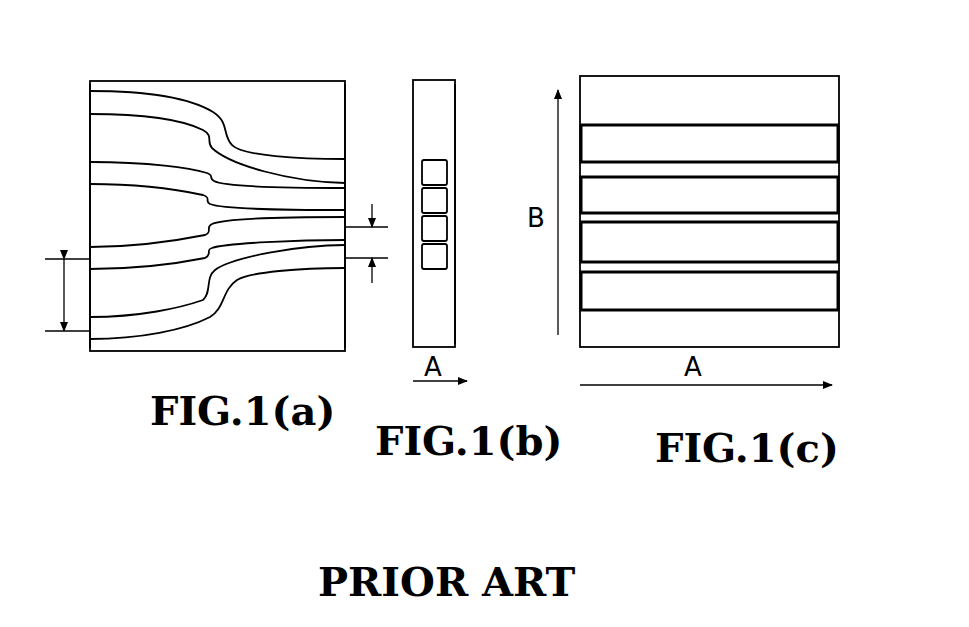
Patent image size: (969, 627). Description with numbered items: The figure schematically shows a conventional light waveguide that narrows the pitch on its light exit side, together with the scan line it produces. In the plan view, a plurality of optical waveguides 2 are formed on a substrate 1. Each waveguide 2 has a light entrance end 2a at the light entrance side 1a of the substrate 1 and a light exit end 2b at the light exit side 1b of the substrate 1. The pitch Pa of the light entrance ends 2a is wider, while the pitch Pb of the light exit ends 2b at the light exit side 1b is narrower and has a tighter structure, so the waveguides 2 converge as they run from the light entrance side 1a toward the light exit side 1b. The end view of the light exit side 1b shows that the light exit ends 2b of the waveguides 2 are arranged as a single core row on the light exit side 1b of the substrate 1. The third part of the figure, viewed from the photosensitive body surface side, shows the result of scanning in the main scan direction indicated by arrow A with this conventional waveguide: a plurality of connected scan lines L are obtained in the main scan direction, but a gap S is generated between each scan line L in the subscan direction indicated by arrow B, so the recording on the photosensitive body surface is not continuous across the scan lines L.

In FIG. 1A, the substrate 1 is at (250, 100).
In FIG. 1B, the substrate 1 is at (438, 92).
In FIG. 1A, the light entrance side 1a is at (90, 143).
In FIG. 1A, the light exit side 1b is at (345, 108).
In FIG. 1B, the light exit side 1b is at (453, 108).
In FIG. 1A, the optical waveguides 2 is at (153, 98).
In FIG. 1A, the light entrance end 2a is at (90, 176).
In FIG. 1A, the light exit end 2b is at (347, 197).
In FIG. 1B, the light exit end 2b is at (440, 258).
In FIG. 1A, the pitch of the light entrance end Pa is at (56, 295).
In FIG. 1A, the pitch of the light exit end Pb is at (367, 262).
In FIG. 1C, the gap S is at (834, 170).
In FIG. 1C, the scan lines L is at (826, 243).